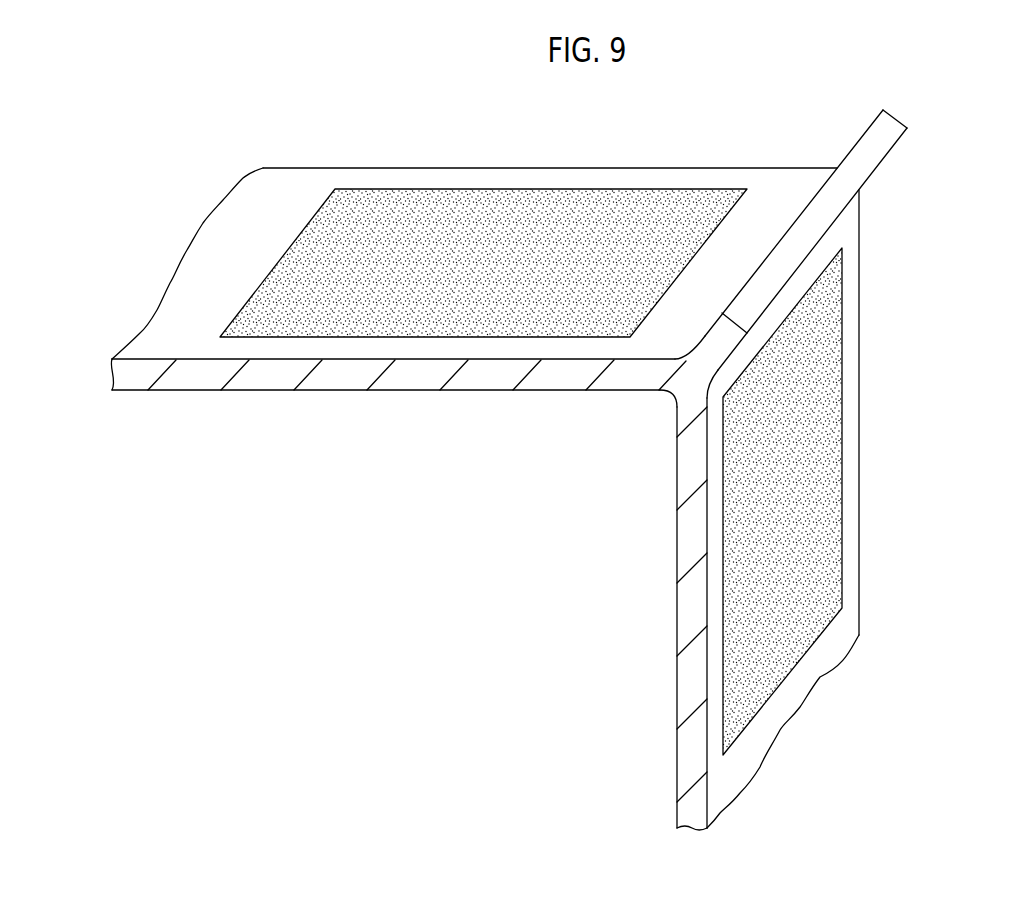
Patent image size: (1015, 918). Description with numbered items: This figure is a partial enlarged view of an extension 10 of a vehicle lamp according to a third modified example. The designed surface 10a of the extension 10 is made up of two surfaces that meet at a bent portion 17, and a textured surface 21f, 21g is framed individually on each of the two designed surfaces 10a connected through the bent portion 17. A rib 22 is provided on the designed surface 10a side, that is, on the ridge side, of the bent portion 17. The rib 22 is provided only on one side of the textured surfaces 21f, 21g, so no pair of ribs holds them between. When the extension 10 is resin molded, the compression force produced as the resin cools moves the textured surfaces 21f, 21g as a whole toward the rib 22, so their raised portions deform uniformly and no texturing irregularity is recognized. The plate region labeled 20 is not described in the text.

The extension 10 is at (918, 293).
The designed surface 10a is at (730, 178).
The bent portion 17 is at (690, 380).
The first plate portion 20 is at (282, 220).
The textured surface 21f is at (527, 217).
The textured surface 21g is at (807, 445).
The rib 22 is at (872, 148).